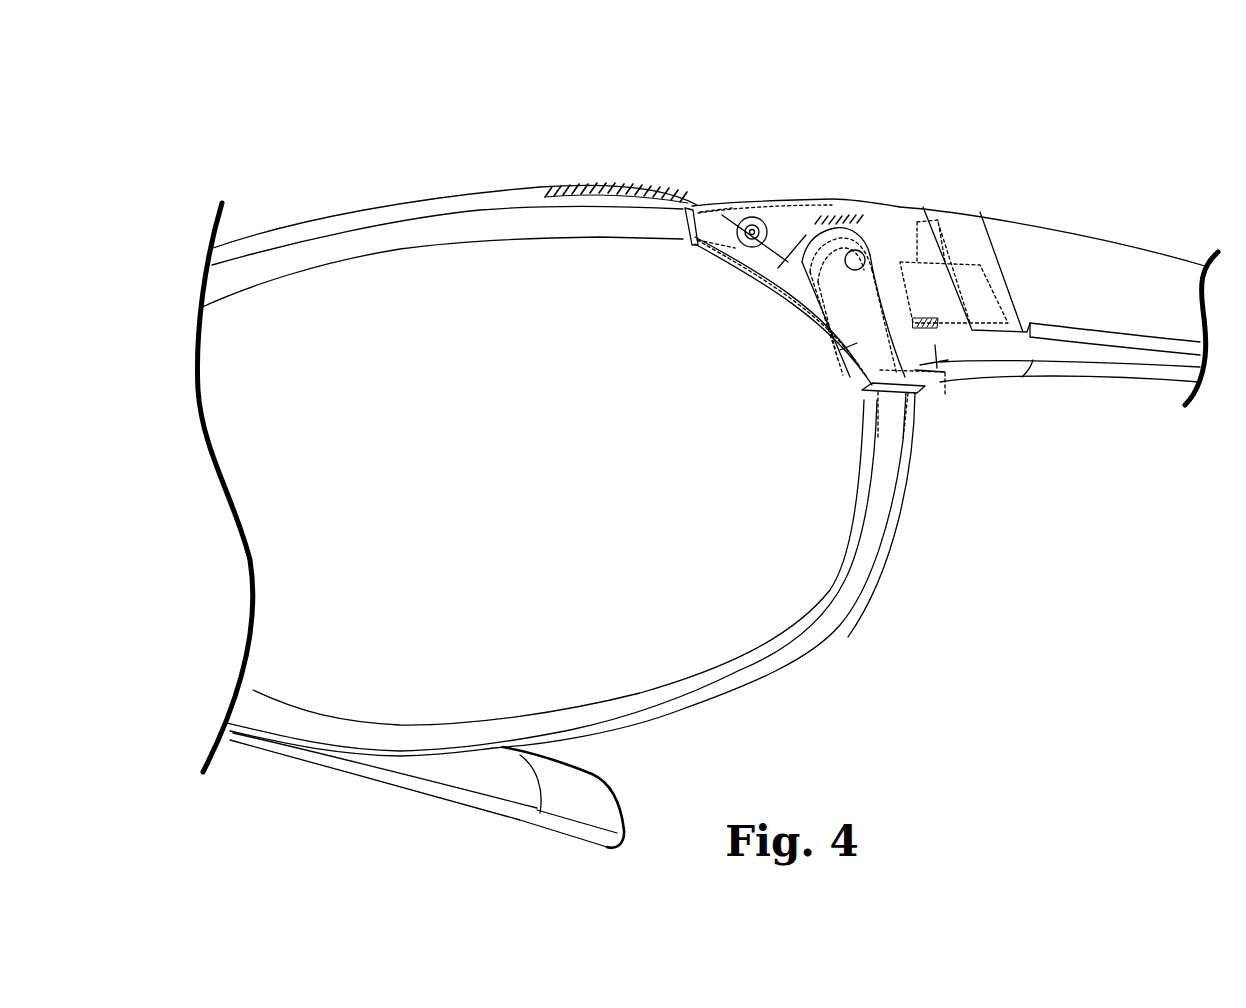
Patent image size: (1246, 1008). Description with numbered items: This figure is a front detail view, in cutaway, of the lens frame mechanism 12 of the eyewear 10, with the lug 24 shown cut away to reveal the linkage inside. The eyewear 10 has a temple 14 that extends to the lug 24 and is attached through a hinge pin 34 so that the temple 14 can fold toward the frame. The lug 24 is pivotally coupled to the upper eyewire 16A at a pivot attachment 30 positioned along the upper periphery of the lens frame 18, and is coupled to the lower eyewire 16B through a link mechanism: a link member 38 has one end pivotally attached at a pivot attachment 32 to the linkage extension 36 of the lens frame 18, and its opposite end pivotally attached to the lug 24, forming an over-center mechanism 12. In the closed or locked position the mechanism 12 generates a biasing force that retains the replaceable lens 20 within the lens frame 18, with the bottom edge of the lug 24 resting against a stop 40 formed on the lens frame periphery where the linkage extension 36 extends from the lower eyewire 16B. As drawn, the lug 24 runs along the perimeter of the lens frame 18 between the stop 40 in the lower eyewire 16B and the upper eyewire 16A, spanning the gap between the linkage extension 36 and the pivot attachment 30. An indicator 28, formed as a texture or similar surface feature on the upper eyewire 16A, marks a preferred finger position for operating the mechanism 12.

The eyewear 10 is at (300, 114).
The lens frame mechanism 12 is at (966, 130).
The temple 14 is at (1122, 255).
The upper eyewire 16A is at (480, 193).
The lower eyewire 16B is at (697, 698).
The lens frame 18 is at (897, 586).
The lens 20 is at (509, 474).
The lug 24 is at (880, 207).
The indicator 28 is at (650, 190).
The pivot attachment 30 is at (770, 225).
The pivot attachment 32 is at (853, 250).
The hinge pin 34 is at (927, 343).
The linkage extension 36 is at (866, 327).
The link member 38 is at (857, 345).
The stop 40 is at (900, 400).